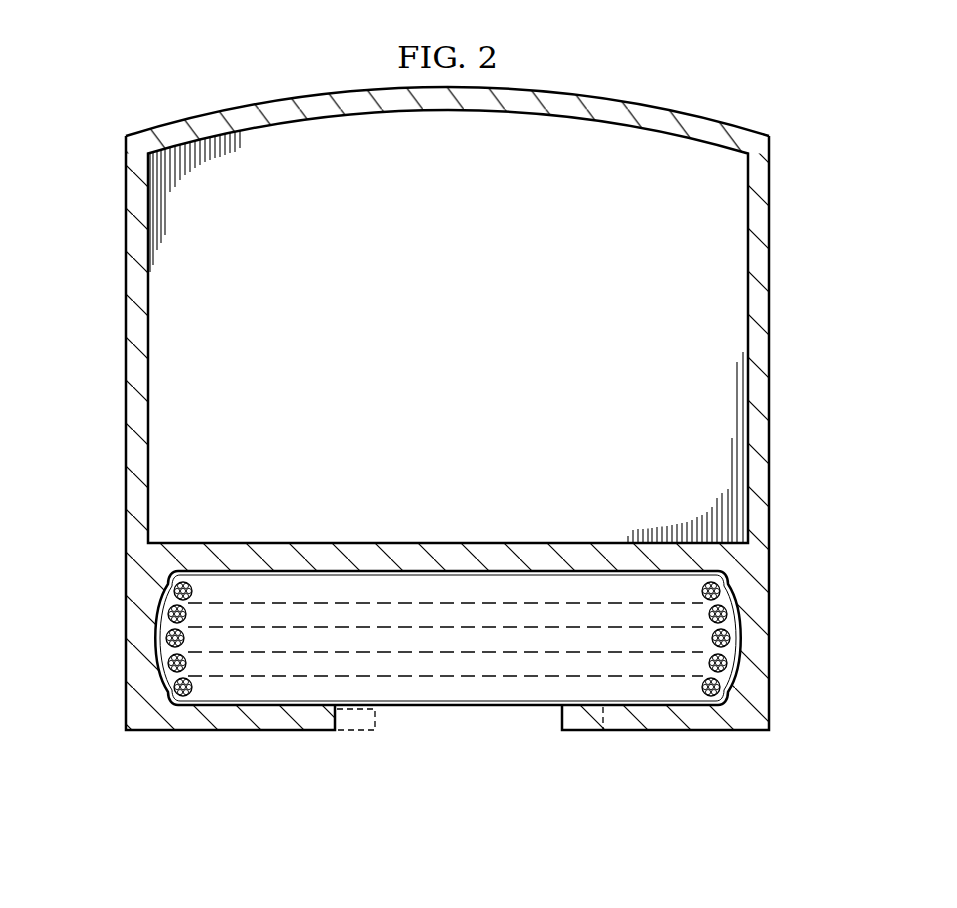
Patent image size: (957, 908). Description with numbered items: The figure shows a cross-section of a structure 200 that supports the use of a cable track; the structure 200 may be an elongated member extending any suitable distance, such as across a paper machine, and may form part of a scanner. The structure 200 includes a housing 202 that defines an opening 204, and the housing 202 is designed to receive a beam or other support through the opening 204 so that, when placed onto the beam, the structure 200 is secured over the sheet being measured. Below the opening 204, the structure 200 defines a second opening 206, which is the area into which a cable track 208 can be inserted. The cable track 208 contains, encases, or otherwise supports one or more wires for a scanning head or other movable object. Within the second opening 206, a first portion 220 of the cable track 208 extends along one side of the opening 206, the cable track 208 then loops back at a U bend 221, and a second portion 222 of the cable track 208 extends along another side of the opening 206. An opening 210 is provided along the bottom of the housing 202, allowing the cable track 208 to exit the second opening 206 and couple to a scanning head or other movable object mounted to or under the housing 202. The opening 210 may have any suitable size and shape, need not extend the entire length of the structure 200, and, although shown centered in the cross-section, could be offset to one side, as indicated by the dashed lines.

The structure 200 is at (309, 56).
The housing 202 is at (587, 86).
The opening 204 is at (468, 341).
The second opening 206 is at (136, 637).
The cable track 208 is at (416, 680).
The opening 210 is at (458, 736).
The first portion 220 is at (165, 689).
The U bend 221 is at (512, 668).
The second portion 222 is at (722, 700).